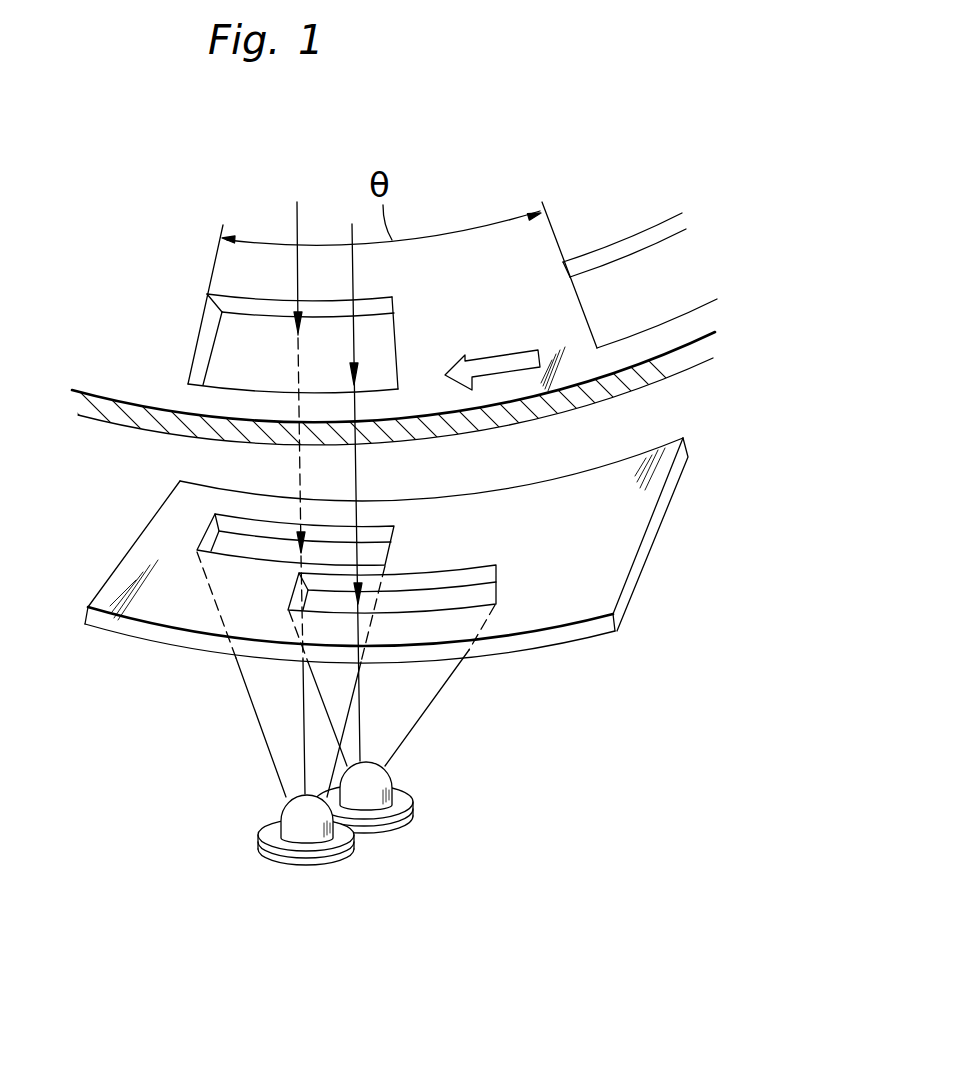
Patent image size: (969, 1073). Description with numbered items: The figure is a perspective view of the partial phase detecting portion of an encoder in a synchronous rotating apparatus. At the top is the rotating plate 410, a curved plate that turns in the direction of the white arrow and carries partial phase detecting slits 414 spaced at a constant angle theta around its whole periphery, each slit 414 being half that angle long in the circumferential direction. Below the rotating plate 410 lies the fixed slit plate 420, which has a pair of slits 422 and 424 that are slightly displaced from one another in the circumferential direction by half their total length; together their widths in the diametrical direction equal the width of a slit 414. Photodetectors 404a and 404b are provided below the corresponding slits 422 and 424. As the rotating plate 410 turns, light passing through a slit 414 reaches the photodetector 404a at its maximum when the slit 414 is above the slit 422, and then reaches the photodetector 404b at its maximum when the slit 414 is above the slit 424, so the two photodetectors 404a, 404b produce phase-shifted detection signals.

The rotating plate 410 is at (137, 362).
The partial phase detecting slit 414 is at (228, 340).
The fixed slit plate 420 is at (620, 542).
The slit 422 is at (497, 583).
The slit 424 is at (210, 533).
The photodetector 404a is at (368, 792).
The photodetector 404b is at (302, 828).